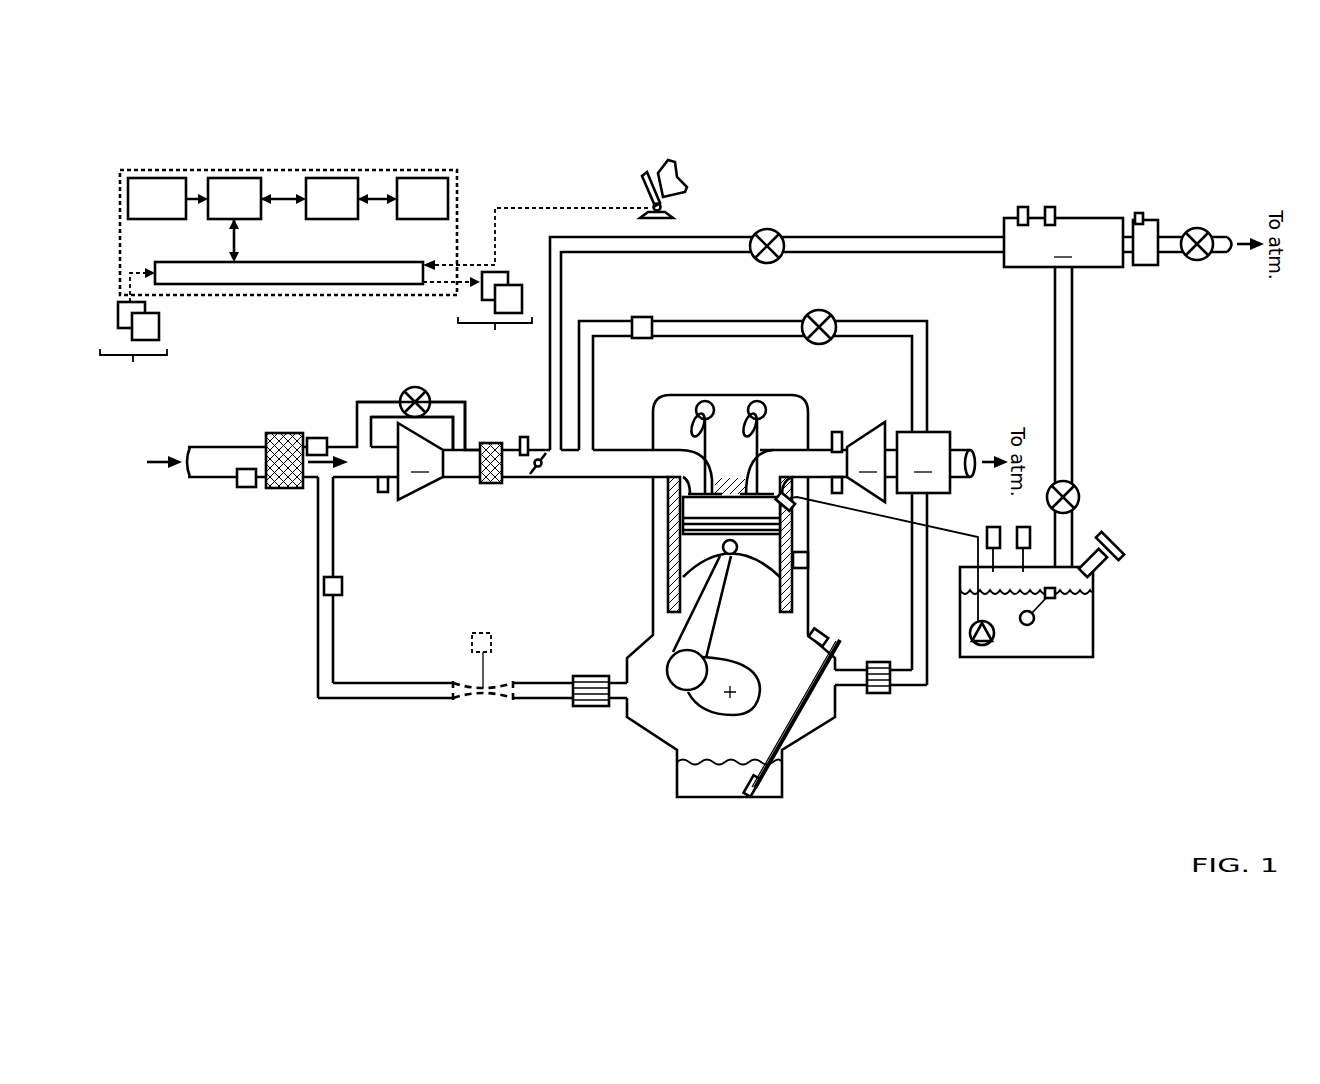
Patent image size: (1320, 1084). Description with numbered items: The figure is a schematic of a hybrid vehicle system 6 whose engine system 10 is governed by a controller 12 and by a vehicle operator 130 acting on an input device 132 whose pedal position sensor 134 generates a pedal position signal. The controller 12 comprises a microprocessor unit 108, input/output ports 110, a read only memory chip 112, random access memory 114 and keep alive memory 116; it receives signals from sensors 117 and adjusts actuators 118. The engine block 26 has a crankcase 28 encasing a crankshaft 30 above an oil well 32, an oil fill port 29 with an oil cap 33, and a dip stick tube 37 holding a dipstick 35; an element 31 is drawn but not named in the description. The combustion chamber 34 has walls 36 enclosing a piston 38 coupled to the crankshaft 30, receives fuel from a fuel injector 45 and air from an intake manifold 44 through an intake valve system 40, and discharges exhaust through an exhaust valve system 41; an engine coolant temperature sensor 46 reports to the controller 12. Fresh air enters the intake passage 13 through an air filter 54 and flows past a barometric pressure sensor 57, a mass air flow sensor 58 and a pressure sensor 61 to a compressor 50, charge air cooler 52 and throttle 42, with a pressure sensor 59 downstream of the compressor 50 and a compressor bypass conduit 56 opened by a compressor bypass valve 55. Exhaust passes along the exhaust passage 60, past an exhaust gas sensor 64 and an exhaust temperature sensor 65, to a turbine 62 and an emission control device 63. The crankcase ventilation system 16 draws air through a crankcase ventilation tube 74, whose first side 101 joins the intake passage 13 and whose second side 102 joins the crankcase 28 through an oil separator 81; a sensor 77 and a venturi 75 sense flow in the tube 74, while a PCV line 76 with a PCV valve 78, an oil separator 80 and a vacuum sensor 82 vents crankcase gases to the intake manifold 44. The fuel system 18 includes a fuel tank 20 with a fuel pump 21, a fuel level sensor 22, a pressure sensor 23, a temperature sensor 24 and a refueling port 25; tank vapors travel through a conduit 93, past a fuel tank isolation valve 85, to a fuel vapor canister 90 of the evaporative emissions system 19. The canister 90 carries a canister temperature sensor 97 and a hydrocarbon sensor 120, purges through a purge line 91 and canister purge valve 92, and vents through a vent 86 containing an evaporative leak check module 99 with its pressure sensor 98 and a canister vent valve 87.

The hybrid vehicle system 6 is at (1185, 160).
The engine system 10 is at (903, 182).
The controller 12 is at (382, 212).
The intake passage 13 is at (243, 447).
The positive crankcase ventilation system 16 is at (960, 332).
The fuel system 18 is at (1033, 603).
The evaporative emissions system 19 is at (1102, 297).
The fuel tank 20 is at (960, 648).
The fuel pump 21 is at (992, 630).
The fuel level sensor 22 is at (1030, 626).
The pressure sensor 23 is at (990, 527).
The temperature sensor 24 is at (1024, 527).
The refueling port 25 is at (1100, 568).
The engine block 26 is at (797, 614).
The crankcase 28 is at (835, 720).
The oil fill port 29 is at (803, 621).
The crankshaft 30 is at (676, 688).
The cylinder wall 31 is at (655, 636).
The oil well 32 is at (730, 782).
The oil cap 33 is at (823, 632).
The combustion chamber 34 is at (683, 499).
The dipstick 35 is at (805, 709).
The combustion chamber walls 36 is at (792, 532).
The dip stick tube 37 is at (806, 690).
The piston 38 is at (690, 546).
The intake valve system 40 is at (709, 452).
The exhaust valve system 41 is at (760, 452).
The throttle 42 is at (536, 470).
The intake manifold 44 is at (605, 477).
The fuel injector 45 is at (800, 505).
The engine coolant temperature sensor 46 is at (808, 565).
The compressor 50 is at (420, 461).
The charge air cooler 52 is at (490, 484).
The air filter 54 is at (280, 433).
The compressor bypass valve 55 is at (418, 390).
The compressor bypass conduit 56 is at (455, 402).
The barometric pressure sensor 57 is at (246, 487).
The mass air flow sensor 58 is at (316, 438).
The pressure sensor 59 is at (524, 437).
The exhaust passage 60 is at (834, 431).
The pressure sensor 61 is at (383, 492).
The turbine 62 is at (866, 462).
The emission control device 63 is at (923, 462).
The exhaust gas sensor 64 is at (876, 428).
The exhaust temperature sensor 65 is at (841, 493).
The crankcase ventilation tube 74 is at (530, 700).
The venturi 75 is at (485, 700).
The PCV line 76 is at (738, 336).
The crankcase vent tube sensor 77 is at (342, 590).
The PCV valve 78 is at (825, 310).
The oil separator 80 is at (873, 662).
The oil separator 81 is at (592, 676).
The vacuum sensor 82 is at (640, 338).
The fuel tank isolation valve 85 is at (1079, 495).
The vent 86 is at (1168, 238).
The canister vent valve 87 is at (1200, 228).
The fuel vapor canister 90 is at (1063, 242).
The purge line 91 is at (920, 237).
The canister purge valve 92 is at (772, 230).
The conduit 93 is at (1073, 335).
The canister temperature sensor 97 is at (1022, 207).
The pressure sensor 98 is at (1140, 212).
The evaporative leak check module 99 is at (1145, 242).
The first side 101 is at (310, 497).
The second side 102 is at (620, 708).
The microprocessor unit 108 is at (226, 177).
The input/output ports 110 is at (318, 262).
The read only memory chip 112 is at (143, 177).
The random access memory 114 is at (316, 177).
The keep alive memory 116 is at (405, 177).
The sensors 117 is at (133, 352).
The actuators 118 is at (495, 321).
The hydrocarbon sensor 120 is at (1051, 207).
The vehicle operator 130 is at (674, 181).
The input device 132 is at (642, 188).
The pedal position sensor 134 is at (667, 207).